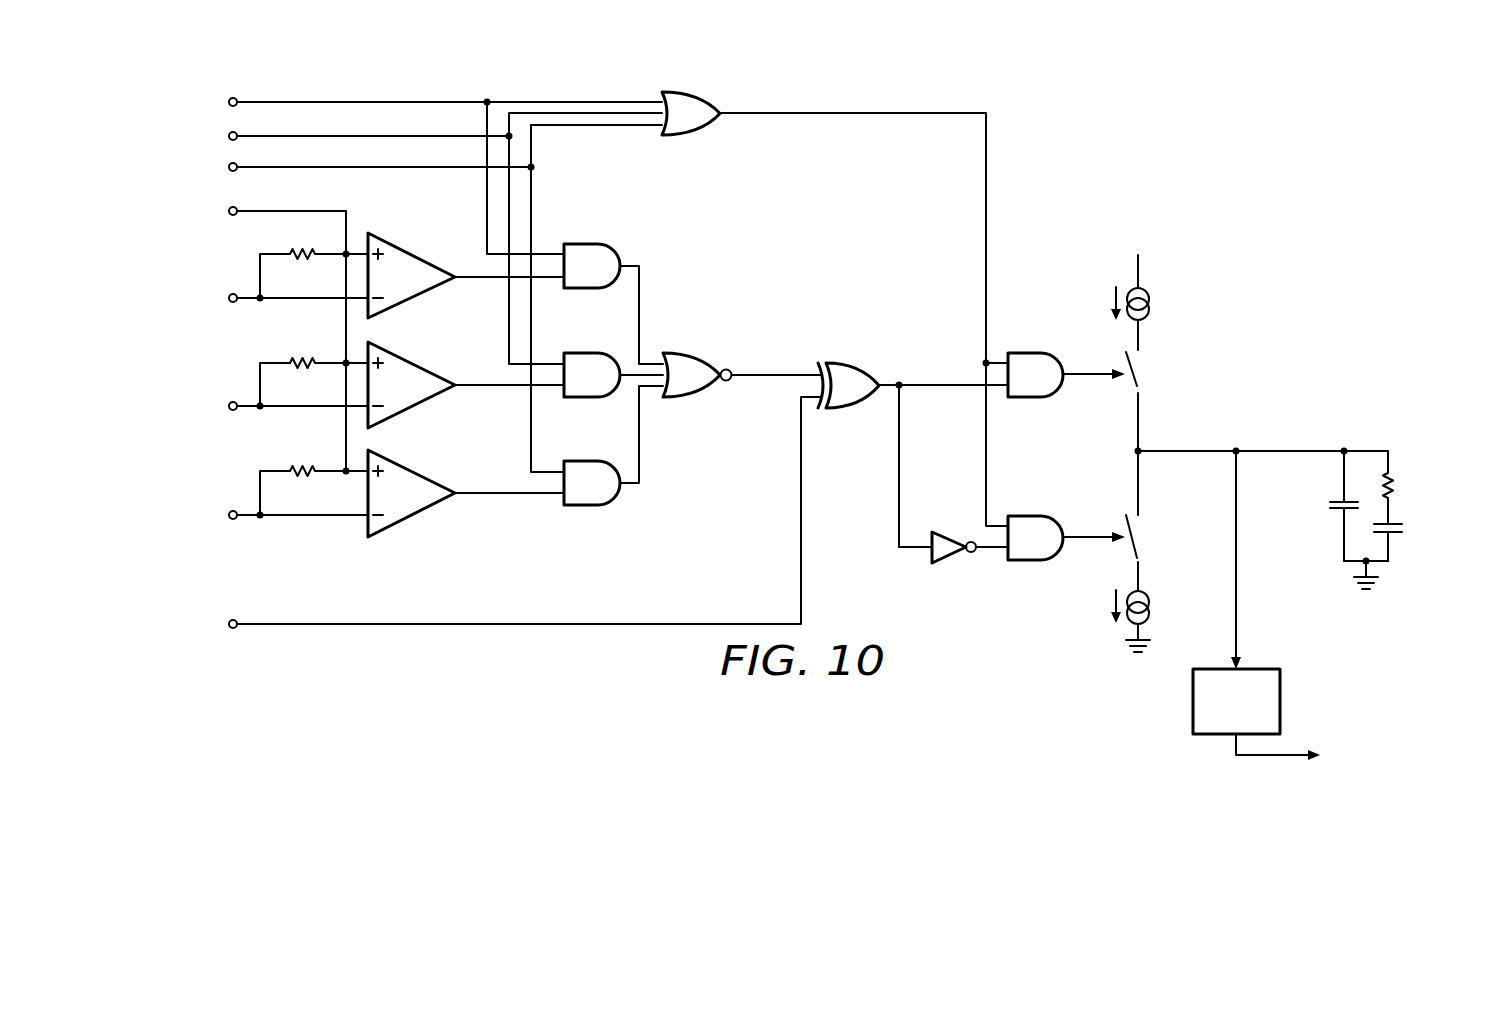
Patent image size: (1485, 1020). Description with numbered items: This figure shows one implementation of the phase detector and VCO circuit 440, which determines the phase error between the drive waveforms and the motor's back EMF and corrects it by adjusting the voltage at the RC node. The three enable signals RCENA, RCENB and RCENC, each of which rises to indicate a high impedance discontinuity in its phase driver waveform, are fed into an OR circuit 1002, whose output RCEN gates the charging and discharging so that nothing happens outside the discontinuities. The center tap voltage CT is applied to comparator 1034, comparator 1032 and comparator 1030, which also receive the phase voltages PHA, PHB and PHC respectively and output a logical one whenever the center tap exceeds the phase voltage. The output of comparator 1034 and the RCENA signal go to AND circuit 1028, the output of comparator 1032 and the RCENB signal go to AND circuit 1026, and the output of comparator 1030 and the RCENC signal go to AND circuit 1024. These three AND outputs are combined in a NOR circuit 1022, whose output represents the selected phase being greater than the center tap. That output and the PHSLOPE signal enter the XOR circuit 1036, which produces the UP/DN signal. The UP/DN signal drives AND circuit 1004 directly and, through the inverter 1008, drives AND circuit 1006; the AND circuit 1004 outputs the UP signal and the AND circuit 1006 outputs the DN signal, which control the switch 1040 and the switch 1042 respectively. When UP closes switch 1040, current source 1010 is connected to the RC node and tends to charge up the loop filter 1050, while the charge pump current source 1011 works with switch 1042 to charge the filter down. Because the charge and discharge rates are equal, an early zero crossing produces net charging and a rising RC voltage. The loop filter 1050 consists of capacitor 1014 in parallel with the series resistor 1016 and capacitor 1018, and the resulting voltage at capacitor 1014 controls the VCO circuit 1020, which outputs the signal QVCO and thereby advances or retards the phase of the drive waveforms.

The phase detector and VCO circuit 440 is at (1283, 120).
The OR circuit 1002 is at (678, 92).
The AND circuit 1004 is at (1029, 354).
The AND circuit 1006 is at (1030, 516).
The inverter 1008 is at (947, 561).
The RC current source 1010 is at (1155, 272).
The RC current source (charge pump) 1011 is at (1125, 662).
The capacitor 1014 is at (1332, 505).
The resistor 1016 is at (1394, 488).
The capacitor 1018 is at (1396, 529).
The VCO circuit 1020 is at (1281, 700).
The NOR circuit 1022 is at (683, 354).
The AND circuit 1024 is at (583, 507).
The AND circuit 1026 is at (575, 400).
The AND circuit 1028 is at (585, 244).
The comparator 1030 is at (412, 520).
The comparator 1032 is at (431, 345).
The comparator 1034 is at (431, 236).
The XOR circuit 1036 is at (845, 364).
The switch 1040 is at (1140, 371).
The switch 1042 is at (1140, 535).
The loop filter 1050 is at (1366, 450).